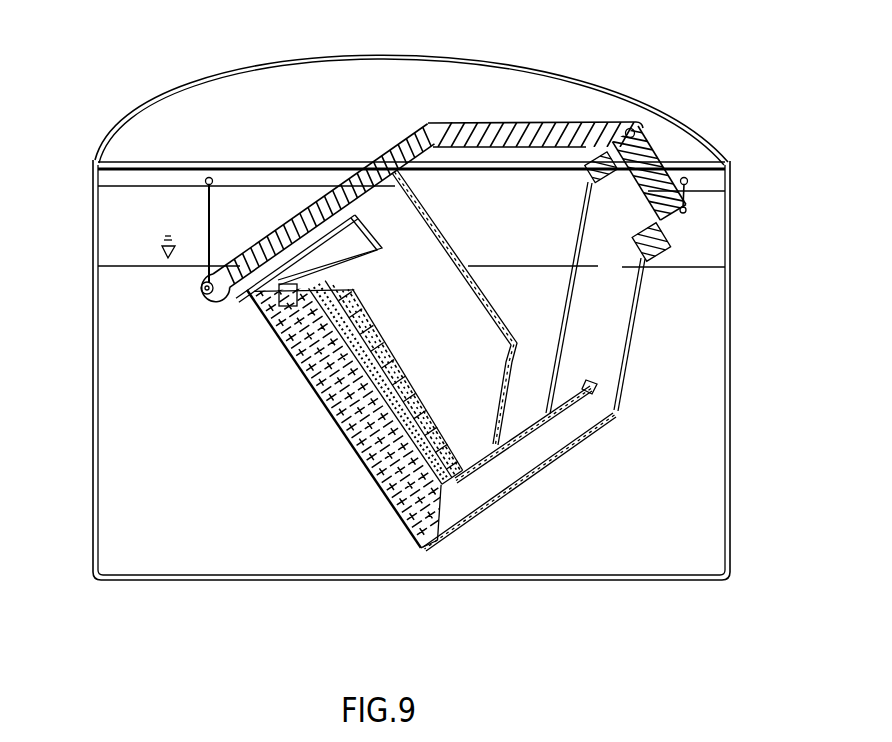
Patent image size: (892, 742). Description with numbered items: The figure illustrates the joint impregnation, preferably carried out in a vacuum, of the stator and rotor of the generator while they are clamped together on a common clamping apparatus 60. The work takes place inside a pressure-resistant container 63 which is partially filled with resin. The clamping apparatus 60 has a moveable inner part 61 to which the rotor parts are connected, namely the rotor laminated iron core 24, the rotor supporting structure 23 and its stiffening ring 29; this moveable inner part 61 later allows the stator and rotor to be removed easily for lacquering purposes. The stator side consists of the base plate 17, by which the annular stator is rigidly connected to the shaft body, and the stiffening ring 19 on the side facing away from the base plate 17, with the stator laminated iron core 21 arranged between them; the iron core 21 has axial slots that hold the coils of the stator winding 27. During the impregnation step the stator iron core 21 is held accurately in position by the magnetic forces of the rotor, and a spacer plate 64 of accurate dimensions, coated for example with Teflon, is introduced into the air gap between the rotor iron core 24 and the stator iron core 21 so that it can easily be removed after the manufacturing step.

The base plate 17 is at (633, 345).
The stiffening ring 19 is at (235, 268).
The laminated iron core 21 is at (320, 397).
The supporting structure 23 is at (600, 411).
The laminated iron core 24 is at (533, 470).
The stator winding 27 is at (448, 535).
The stiffening ring 29 is at (328, 250).
The clamping apparatus 60 is at (537, 123).
The moveable inner part 61 is at (437, 232).
The pressure-resistant container 63 is at (346, 62).
The spacer plate 64 is at (455, 490).